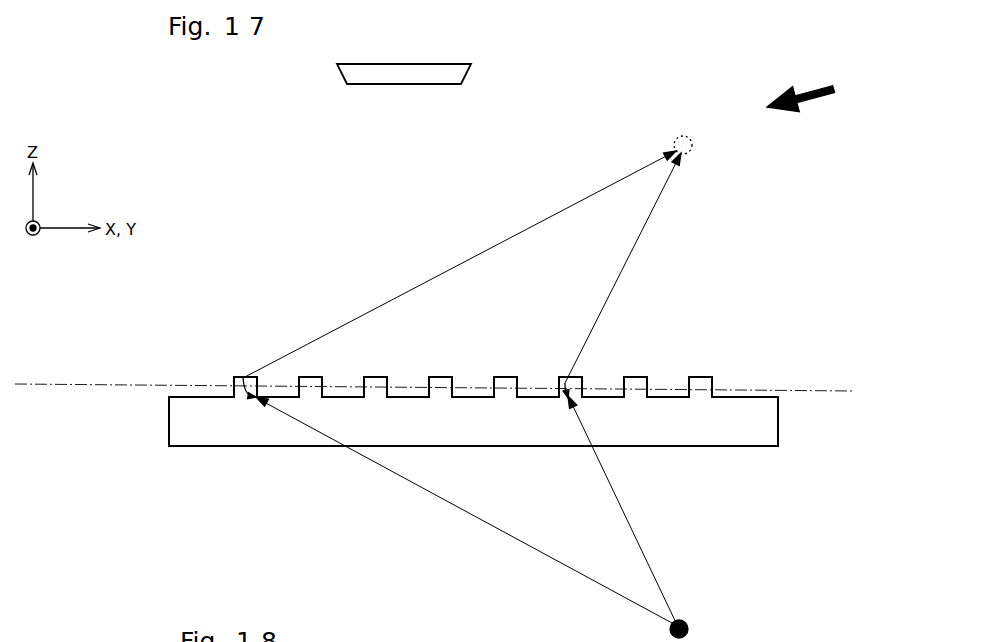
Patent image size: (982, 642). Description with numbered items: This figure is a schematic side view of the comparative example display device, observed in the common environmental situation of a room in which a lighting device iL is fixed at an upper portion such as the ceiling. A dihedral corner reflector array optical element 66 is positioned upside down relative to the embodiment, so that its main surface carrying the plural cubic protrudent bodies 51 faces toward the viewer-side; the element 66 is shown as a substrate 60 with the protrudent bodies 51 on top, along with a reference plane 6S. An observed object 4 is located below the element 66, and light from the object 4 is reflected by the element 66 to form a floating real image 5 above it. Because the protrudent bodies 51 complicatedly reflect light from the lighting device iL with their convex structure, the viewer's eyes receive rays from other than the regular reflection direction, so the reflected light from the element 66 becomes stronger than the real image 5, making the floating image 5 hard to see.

The lighting device iL is at (462, 73).
The floating image 5 is at (690, 136).
The cubic protrudent bodies 51 is at (245, 368).
The dihedral corner reflector array optical element 66 is at (748, 372).
The reference plane 6S is at (806, 392).
The diffraction grating substrate 60 is at (169, 425).
The observed object 4 is at (692, 625).